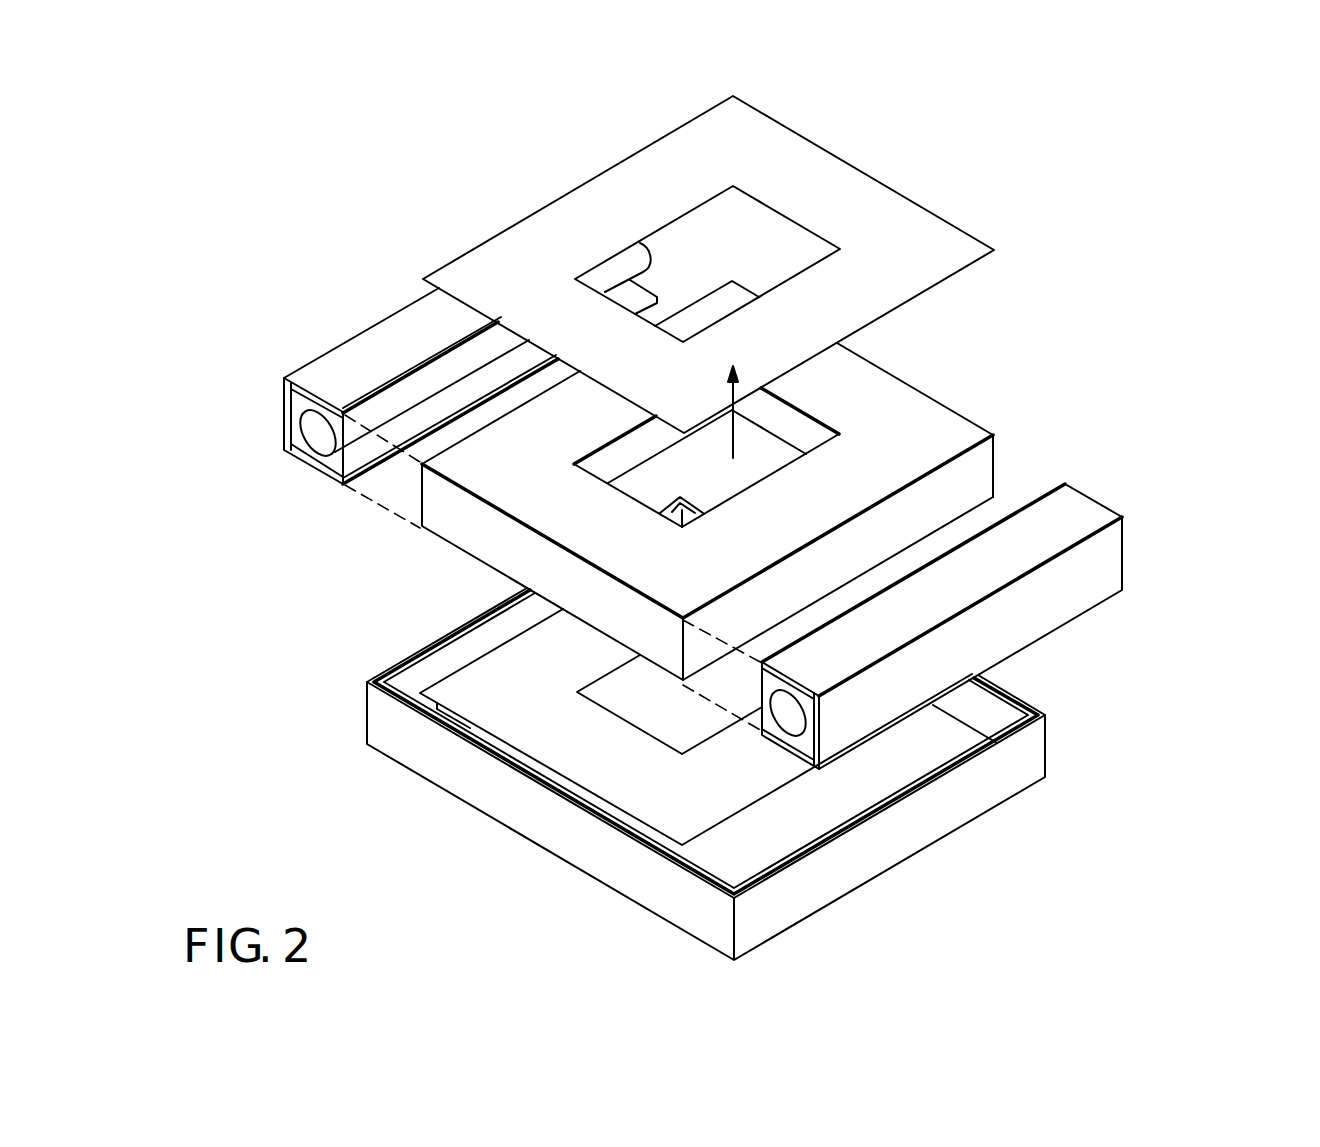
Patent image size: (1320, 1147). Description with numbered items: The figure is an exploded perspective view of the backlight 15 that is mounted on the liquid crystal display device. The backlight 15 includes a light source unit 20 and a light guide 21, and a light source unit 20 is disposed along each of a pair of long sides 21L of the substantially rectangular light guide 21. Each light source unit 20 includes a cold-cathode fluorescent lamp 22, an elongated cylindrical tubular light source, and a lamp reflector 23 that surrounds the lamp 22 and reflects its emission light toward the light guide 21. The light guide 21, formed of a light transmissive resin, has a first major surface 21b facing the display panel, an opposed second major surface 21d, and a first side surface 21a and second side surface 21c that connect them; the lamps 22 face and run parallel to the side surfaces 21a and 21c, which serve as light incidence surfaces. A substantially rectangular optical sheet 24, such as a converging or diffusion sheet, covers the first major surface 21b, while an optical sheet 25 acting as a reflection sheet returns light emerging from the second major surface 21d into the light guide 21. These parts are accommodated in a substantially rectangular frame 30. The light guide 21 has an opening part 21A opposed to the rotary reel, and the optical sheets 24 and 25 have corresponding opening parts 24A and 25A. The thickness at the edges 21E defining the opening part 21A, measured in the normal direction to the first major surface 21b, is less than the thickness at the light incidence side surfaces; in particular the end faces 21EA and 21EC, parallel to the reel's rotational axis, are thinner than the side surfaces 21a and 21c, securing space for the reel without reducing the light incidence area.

The backlight 15 is at (1160, 252).
The light source unit 20 is at (200, 405).
The light guide 21 is at (977, 418).
The opening part 21A is at (765, 448).
The first side surface 21a is at (978, 476).
The first major surface 21b is at (898, 406).
The second side surface 21c is at (403, 492).
The second major surface 21d is at (445, 548).
The edges 21E is at (730, 503).
The end face 21EA is at (765, 467).
The end face 21EC is at (611, 458).
The long sides 21L is at (505, 420).
The cold-cathode fluorescent lamp 22 is at (316, 435).
The lamp reflector 23 is at (283, 412).
The optical sheet 24 is at (994, 250).
The opening part 24A is at (768, 247).
The optical sheet (reflection sheet) 25 is at (650, 831).
The opening part 25A is at (648, 709).
The frame 30 is at (652, 913).